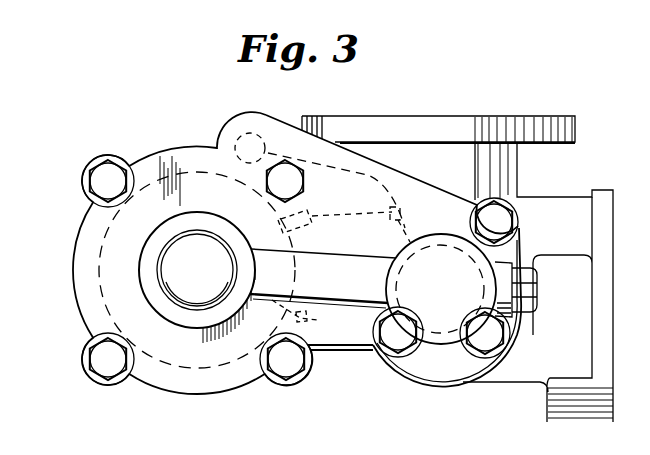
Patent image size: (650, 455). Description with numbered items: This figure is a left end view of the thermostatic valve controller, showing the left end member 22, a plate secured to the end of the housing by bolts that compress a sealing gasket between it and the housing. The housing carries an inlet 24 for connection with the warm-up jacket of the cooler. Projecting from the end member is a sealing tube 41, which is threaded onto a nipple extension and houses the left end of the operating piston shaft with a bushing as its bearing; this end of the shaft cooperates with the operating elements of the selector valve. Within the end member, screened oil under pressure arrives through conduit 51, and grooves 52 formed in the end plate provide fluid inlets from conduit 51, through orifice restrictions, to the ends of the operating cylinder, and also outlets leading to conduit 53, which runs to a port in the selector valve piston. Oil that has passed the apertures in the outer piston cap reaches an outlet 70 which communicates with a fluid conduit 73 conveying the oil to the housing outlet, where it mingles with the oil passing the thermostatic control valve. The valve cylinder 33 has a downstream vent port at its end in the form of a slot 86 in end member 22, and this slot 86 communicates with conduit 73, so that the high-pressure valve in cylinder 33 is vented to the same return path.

The left end member 22 is at (188, 127).
The inlet 24 is at (482, 103).
The valve cylinder 33 is at (253, 140).
The sealing tube 41 is at (160, 270).
The conduit 51 is at (306, 212).
The grooves 52 is at (323, 278).
The conduit 53 is at (316, 320).
The outlet 70 is at (410, 238).
The fluid conduit 73 is at (389, 222).
The slot 86 is at (333, 133).